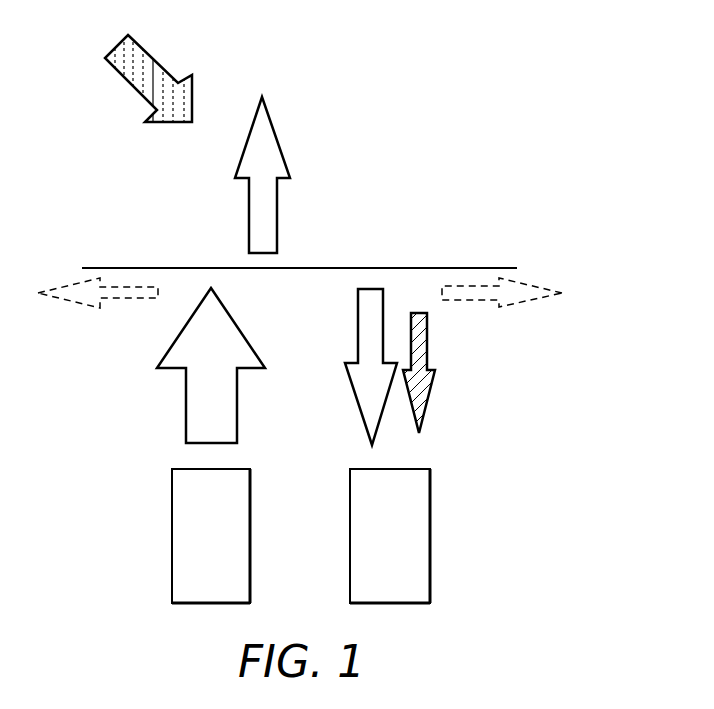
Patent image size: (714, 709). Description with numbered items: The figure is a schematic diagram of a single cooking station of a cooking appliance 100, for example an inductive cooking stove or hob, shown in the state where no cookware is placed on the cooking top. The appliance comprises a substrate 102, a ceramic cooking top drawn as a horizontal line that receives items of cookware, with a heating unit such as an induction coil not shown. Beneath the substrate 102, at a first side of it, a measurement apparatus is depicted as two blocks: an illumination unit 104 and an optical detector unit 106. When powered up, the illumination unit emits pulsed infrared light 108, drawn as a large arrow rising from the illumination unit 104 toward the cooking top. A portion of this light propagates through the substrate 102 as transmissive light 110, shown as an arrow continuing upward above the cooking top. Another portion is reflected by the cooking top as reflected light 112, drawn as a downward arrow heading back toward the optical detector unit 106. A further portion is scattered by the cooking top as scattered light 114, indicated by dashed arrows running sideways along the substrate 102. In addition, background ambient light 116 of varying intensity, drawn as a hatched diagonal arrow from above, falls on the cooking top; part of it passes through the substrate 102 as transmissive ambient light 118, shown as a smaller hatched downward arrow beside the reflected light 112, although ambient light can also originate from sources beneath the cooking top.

The cooking appliance 100 is at (431, 109).
The substrate 102 is at (487, 268).
The illumination unit 104 is at (172, 585).
The optical detector unit 106 is at (430, 585).
The pulsed infrared light 108 is at (186, 430).
The transmissive light 110 is at (277, 235).
The reflected light 112 is at (358, 300).
The scattered light 114 is at (530, 306).
The background ambient light 116 is at (130, 82).
The transmissive ambient light 118 is at (427, 325).